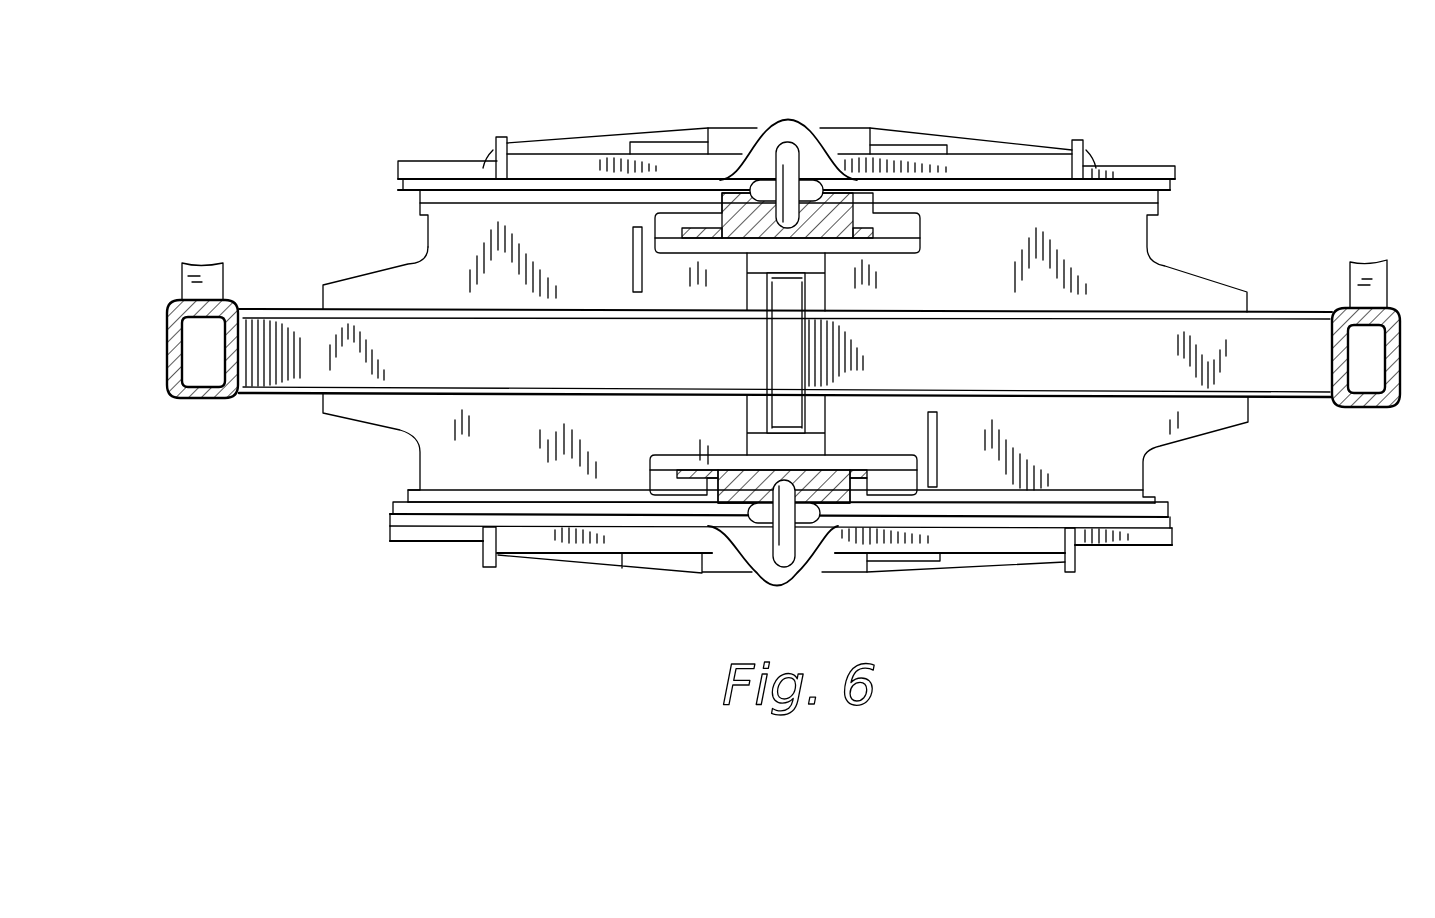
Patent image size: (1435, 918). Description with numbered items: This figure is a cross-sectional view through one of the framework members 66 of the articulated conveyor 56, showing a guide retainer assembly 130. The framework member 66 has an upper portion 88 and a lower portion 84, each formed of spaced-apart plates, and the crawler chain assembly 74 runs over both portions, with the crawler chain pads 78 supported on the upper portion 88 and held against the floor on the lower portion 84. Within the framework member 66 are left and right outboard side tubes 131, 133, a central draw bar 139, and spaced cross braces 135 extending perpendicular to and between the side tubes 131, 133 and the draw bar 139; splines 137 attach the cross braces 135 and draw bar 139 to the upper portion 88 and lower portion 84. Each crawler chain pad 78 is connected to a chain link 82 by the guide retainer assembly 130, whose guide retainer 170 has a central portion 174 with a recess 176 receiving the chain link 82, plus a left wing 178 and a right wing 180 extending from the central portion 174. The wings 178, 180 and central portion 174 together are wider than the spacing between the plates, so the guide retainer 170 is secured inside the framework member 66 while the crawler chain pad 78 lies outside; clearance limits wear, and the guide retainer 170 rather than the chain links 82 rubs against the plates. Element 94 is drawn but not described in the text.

The articulated conveyor 56 is at (445, 61).
The framework member 66 is at (1214, 210).
The crawler chain assembly 74 is at (846, 68).
The crawler chain pad 78 is at (1026, 166).
The chain link 82 is at (760, 519).
The lower portion 84 is at (461, 516).
The upper portion 88 is at (486, 193).
The lower housing portion 94 is at (1198, 461).
The guide retainer assembly 130 is at (776, 94).
The left outboard side tube 131 is at (213, 392).
The right outboard side tube 133 is at (1376, 404).
The cross brace 135 is at (316, 372).
The spline 137 is at (399, 272).
The central draw bar 139 is at (780, 342).
The guide retainer 170 is at (864, 211).
The central portion 174 is at (656, 221).
The recess 176 is at (807, 527).
The left wing 178 is at (693, 465).
The right wing 180 is at (878, 472).